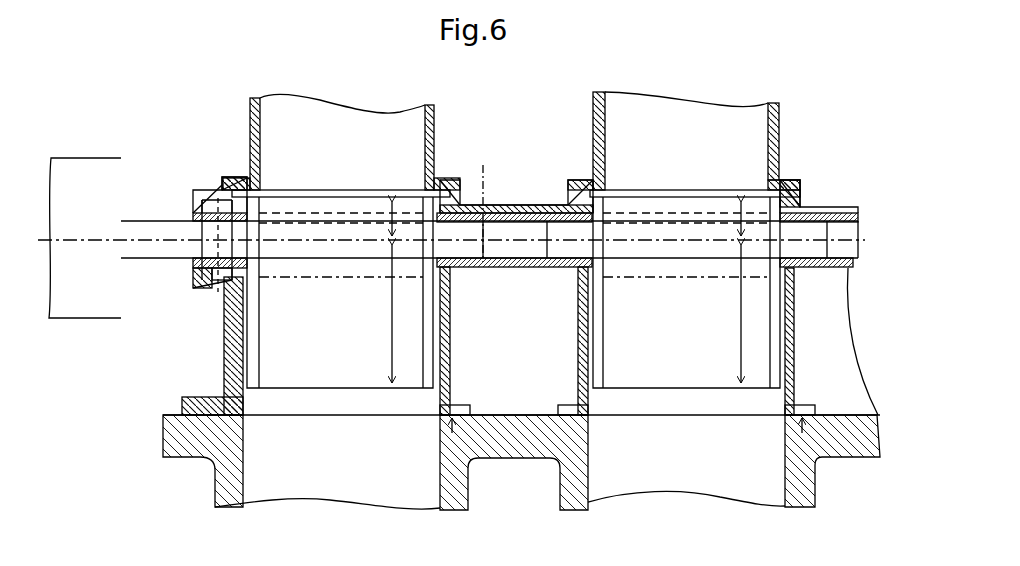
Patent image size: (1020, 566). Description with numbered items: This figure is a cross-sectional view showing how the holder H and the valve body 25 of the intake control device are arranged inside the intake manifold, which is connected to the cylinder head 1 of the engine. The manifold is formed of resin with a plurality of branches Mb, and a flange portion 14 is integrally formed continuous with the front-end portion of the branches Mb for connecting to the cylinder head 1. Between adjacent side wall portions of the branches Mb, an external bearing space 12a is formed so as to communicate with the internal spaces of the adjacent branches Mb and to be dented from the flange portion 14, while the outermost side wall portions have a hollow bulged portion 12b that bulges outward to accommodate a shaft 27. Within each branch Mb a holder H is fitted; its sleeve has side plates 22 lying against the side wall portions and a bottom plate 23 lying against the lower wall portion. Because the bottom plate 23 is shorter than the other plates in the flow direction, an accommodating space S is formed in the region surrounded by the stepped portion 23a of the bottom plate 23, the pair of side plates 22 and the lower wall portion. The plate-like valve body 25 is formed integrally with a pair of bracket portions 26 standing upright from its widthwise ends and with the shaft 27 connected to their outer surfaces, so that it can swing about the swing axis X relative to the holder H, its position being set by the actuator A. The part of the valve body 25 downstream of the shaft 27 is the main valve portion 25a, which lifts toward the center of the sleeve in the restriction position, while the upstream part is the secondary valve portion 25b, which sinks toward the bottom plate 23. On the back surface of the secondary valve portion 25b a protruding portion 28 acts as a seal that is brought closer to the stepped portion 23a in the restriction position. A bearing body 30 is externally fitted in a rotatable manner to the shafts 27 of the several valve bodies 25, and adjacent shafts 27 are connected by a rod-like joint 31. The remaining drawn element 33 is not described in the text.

The cylinder head 1 is at (213, 488).
The external bearing space 12a is at (232, 347).
The hollow bulged portion 12b is at (196, 270).
The flange portion 14 is at (167, 408).
The side plates 22 is at (243, 402).
The bottom plate 23 is at (328, 450).
The stepped portion 23a is at (318, 277).
The valve body 25 is at (408, 207).
The main valve portion 25a is at (392, 320).
The secondary valve portion 25b is at (392, 205).
The bracket portions 26 is at (253, 331).
The shaft 27 is at (223, 207).
The protruding portion 28 is at (335, 212).
The bearing body 30 is at (176, 220).
The joint 31 is at (214, 288).
The bearing holder 33 is at (238, 182).
The actuator A is at (88, 167).
The accommodating space S is at (308, 204).
The swing axis X is at (479, 201).
The holder H is at (480, 460).
The branches Mb is at (250, 112).